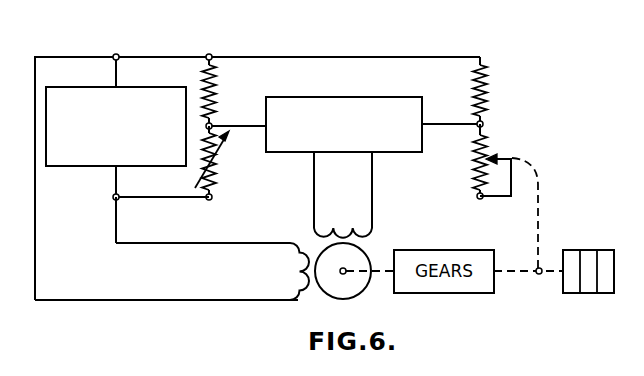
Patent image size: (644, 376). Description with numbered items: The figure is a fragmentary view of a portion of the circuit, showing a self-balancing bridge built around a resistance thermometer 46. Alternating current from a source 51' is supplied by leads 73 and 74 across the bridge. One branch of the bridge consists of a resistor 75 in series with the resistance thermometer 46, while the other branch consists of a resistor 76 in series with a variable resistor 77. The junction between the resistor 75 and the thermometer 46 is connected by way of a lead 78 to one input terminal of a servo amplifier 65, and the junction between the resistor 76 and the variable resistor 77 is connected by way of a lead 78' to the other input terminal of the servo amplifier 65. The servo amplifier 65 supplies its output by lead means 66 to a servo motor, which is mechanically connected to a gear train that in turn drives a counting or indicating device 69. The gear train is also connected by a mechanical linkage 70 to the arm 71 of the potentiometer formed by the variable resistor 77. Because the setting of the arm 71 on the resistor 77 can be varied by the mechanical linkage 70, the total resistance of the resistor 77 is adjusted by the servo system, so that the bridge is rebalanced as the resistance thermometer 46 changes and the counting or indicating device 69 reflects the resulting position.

The lead 73 is at (76, 57).
The alternating current source 51' is at (116, 125).
The resistor 75 is at (215, 84).
The lead 78 is at (236, 114).
The resistance thermometer 46 is at (218, 172).
The lead 74 is at (155, 197).
The servo amplifier 65 is at (370, 97).
The lead means 66 is at (372, 170).
The resistor 76 is at (488, 80).
The lead 78' is at (452, 112).
The variable resistor 77 is at (472, 168).
The arm 71 is at (513, 153).
The mechanical linkage 70 is at (540, 208).
The counting or indicating device 69 is at (600, 250).